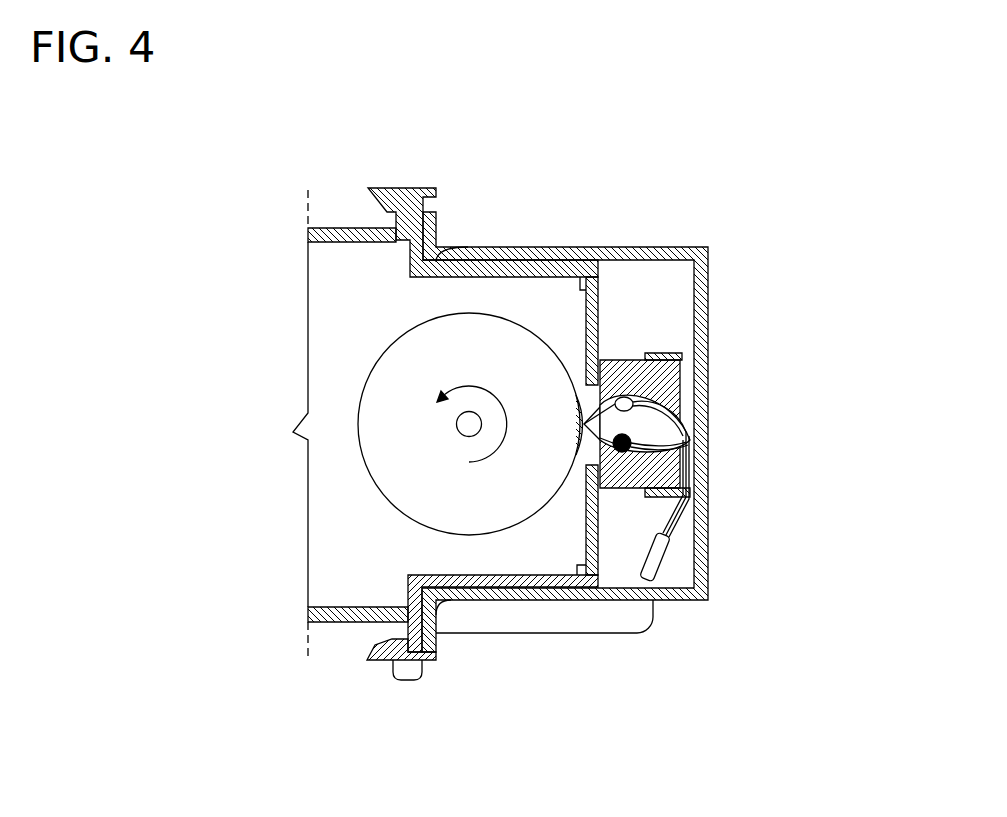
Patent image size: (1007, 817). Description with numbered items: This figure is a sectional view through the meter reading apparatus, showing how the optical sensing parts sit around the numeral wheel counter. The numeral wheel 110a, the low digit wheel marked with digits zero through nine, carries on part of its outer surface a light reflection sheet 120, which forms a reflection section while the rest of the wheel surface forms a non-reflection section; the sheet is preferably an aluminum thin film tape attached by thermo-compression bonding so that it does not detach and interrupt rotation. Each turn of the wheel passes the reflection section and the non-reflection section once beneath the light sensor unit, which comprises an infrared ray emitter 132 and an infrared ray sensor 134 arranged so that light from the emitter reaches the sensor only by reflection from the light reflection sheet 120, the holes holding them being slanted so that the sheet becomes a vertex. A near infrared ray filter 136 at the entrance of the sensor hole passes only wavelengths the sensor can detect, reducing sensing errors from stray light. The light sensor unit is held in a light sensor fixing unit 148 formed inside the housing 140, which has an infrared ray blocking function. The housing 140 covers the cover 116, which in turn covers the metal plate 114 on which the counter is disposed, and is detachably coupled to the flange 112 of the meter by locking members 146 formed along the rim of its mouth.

The numeral wheel 110a is at (392, 495).
The flange 112 is at (410, 680).
The metal plate 114 is at (597, 543).
The cover 116 is at (653, 600).
The light reflection sheet 120 is at (586, 477).
The infrared ray emitter 132 is at (692, 460).
The infrared ray sensor 134 is at (682, 403).
The near infrared ray filter 136 is at (630, 360).
The housing 140 is at (707, 513).
The locking members 146 is at (373, 188).
The light sensor fixing unit 148 is at (660, 356).